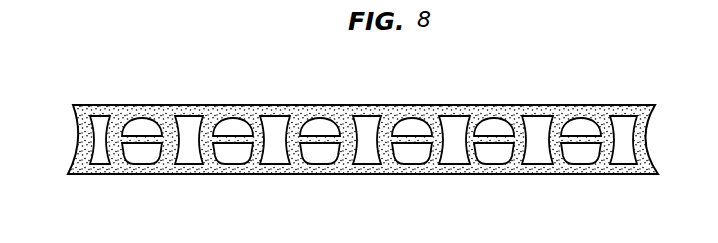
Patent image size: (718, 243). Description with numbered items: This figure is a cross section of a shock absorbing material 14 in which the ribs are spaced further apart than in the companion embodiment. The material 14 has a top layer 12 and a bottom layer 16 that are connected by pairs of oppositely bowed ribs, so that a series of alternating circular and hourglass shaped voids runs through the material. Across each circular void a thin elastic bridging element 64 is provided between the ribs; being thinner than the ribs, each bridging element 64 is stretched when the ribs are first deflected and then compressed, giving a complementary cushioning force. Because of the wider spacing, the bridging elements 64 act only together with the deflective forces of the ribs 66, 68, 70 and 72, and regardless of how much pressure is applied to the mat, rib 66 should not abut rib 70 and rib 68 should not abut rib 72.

The top layer 12 is at (628, 105).
The material 14 is at (648, 142).
The bottom layer 16 is at (615, 172).
The bridging element 64 is at (140, 137).
The rib 66 is at (474, 163).
The rib 68 is at (511, 157).
The rib 70 is at (430, 158).
The rib 72 is at (564, 160).